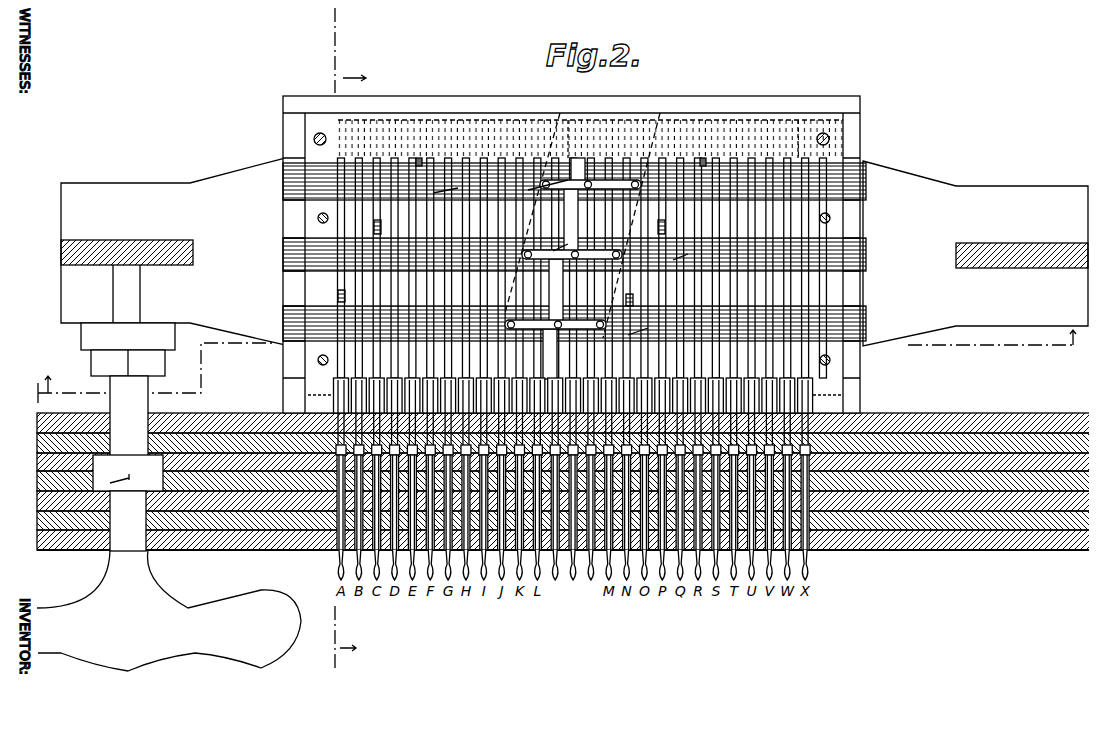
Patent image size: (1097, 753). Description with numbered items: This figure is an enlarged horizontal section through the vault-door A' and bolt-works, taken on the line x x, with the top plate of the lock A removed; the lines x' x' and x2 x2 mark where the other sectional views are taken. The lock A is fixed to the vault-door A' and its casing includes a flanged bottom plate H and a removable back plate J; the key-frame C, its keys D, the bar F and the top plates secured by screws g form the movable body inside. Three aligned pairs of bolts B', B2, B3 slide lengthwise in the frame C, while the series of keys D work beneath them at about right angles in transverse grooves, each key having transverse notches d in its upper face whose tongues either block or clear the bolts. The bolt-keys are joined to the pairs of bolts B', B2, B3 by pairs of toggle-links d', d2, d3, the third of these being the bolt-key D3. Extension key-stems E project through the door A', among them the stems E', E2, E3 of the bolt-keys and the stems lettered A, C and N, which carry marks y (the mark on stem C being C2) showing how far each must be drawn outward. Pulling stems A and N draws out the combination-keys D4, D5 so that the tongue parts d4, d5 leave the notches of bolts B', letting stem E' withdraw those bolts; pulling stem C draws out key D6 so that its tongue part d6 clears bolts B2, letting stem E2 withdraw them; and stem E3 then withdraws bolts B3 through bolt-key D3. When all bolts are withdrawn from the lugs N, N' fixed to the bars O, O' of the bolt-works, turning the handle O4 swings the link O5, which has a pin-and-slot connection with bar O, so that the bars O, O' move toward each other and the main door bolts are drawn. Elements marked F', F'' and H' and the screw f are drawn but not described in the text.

The lock A is at (571, 245).
The vault-door A' is at (563, 490).
The bolt pair B' is at (574, 323).
The bolt pair B2 is at (574, 254).
The bolt pair B3 is at (574, 181).
The key-frame C is at (574, 291).
The key-stem C' is at (573, 292).
The key-stem mark C2 is at (392, 472).
The transverse notches d is at (527, 238).
The toggle-links d' is at (582, 246).
The toggle-links d2 is at (394, 223).
The toggle-links d3 is at (562, 174).
The tongue part d4 is at (604, 254).
The tongue part d5 is at (644, 327).
The tongue part d6 is at (535, 256).
The keys D is at (582, 268).
The bolt-key D3 is at (600, 216).
The combination-key D4 is at (367, 325).
The combination-key D5 is at (541, 287).
The combination-key D6 is at (707, 218).
The key-stems E is at (573, 473).
The key-stem E' is at (554, 494).
The key-stem E2 is at (565, 574).
The key-stem E3 is at (583, 574).
The bar F is at (590, 139).
The plate F' is at (583, 139).
The plate F'' is at (797, 139).
The screw f is at (306, 128).
The screws g is at (573, 289).
The bottom plate H is at (571, 291).
The guide plate H' is at (575, 395).
The back plate J is at (645, 92).
The lug N is at (173, 251).
The lug N' is at (975, 253).
The bolt-works bar O is at (127, 270).
The bolt-works bar O' is at (1022, 244).
The handle O4 is at (169, 523).
The link or bar O5 is at (128, 349).
The section line x is at (195, 205).
The section line x' is at (997, 341).
The section line x2 is at (341, 644).
The marks y is at (325, 545).